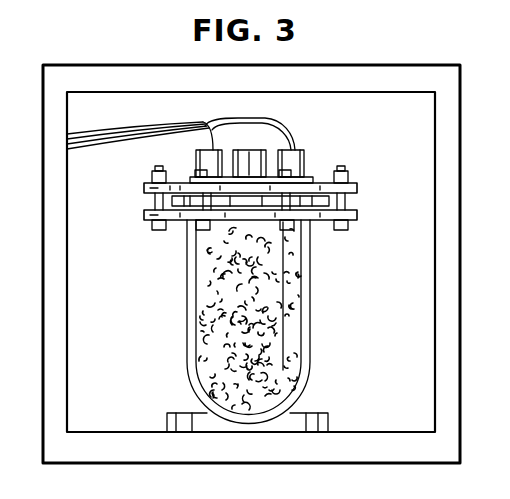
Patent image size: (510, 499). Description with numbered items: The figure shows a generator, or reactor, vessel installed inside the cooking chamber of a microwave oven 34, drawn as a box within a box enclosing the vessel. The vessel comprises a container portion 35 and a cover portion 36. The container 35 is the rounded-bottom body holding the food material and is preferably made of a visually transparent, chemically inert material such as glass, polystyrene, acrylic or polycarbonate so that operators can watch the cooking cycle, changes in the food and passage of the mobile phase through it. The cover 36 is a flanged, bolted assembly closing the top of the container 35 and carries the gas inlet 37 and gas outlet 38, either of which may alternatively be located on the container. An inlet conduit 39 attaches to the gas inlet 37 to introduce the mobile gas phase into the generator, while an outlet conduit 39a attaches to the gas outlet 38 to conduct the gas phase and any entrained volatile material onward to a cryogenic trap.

The microwave oven 34 is at (460, 178).
The container portion 35 is at (311, 343).
The cover portion 36 is at (303, 180).
The gas inlet 37 is at (196, 158).
The gas outlet 38 is at (302, 163).
The inlet conduit 39 is at (97, 138).
The outlet conduit 39a is at (290, 128).